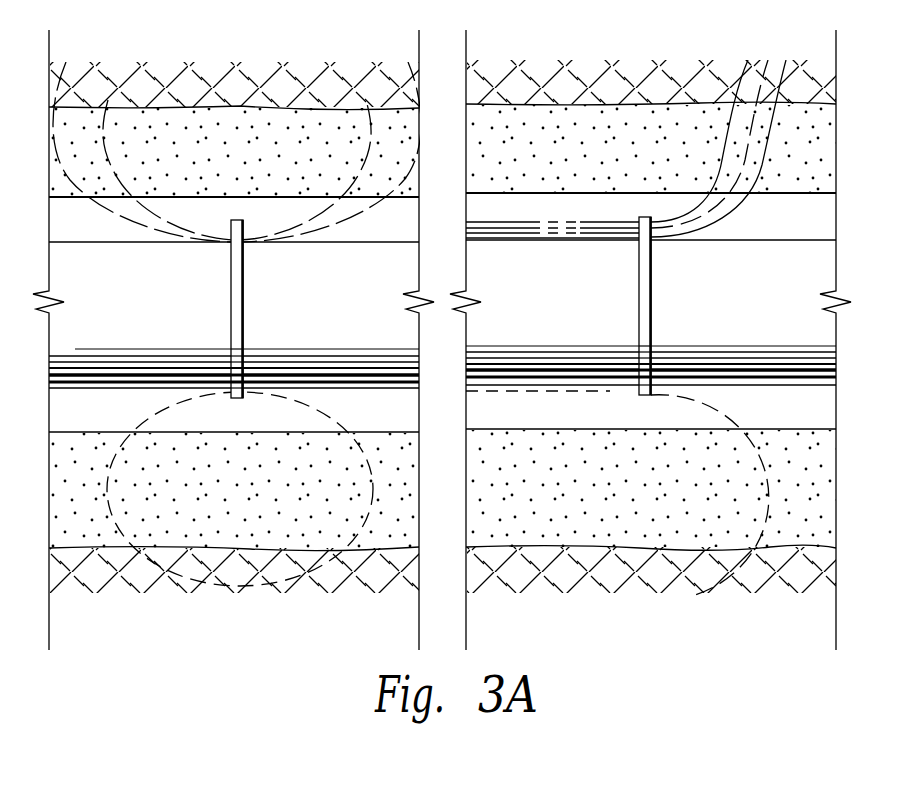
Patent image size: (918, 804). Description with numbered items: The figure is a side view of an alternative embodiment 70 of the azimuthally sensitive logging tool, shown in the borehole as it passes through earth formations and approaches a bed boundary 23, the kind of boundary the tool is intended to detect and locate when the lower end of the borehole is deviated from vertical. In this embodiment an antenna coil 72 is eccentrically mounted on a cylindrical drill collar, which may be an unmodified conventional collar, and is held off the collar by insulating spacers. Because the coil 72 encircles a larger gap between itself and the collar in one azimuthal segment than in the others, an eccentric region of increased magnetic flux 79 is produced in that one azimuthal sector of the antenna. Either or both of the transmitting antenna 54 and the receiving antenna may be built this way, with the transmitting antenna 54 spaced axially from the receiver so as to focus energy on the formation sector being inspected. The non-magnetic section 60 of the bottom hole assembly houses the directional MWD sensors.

The bed boundary 23 is at (502, 106).
The transmitting antenna 54 is at (244, 309).
The non-magnetic section 60 is at (623, 324).
The alternative embodiment 70 is at (733, 238).
The antenna coil 72 is at (652, 288).
The eccentric region of increased magnetic flux 79 is at (636, 222).